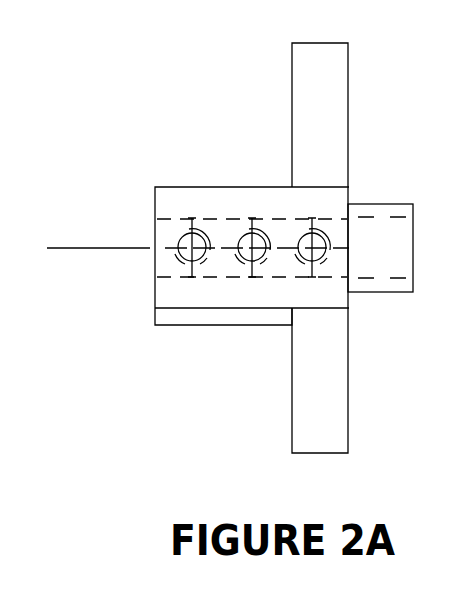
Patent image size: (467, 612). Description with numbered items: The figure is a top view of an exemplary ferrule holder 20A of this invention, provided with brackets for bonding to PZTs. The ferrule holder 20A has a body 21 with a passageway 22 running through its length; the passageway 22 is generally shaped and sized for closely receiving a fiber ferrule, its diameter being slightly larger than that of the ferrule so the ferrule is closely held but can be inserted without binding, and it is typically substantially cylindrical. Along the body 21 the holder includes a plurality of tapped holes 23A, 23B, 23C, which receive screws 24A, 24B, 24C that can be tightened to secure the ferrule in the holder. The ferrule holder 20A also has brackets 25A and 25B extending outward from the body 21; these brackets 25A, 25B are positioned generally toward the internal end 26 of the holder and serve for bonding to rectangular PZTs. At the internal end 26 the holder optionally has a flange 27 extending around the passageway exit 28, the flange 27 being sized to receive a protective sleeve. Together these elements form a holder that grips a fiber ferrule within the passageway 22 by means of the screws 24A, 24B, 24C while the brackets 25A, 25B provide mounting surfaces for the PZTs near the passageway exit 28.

The ferrule holder 20A is at (428, 78).
The body 21 is at (163, 237).
The passageway 22 is at (155, 267).
The tapped hole 23A is at (187, 233).
The tapped hole 23B is at (245, 235).
The tapped hole 23C is at (305, 236).
The screw 24A is at (188, 263).
The screw 24B is at (248, 263).
The screw 24C is at (305, 263).
The bracket 25A is at (312, 79).
The bracket 25B is at (313, 422).
The internal end 26 is at (348, 298).
The flange 27 is at (385, 233).
The passageway exit 28 is at (333, 277).